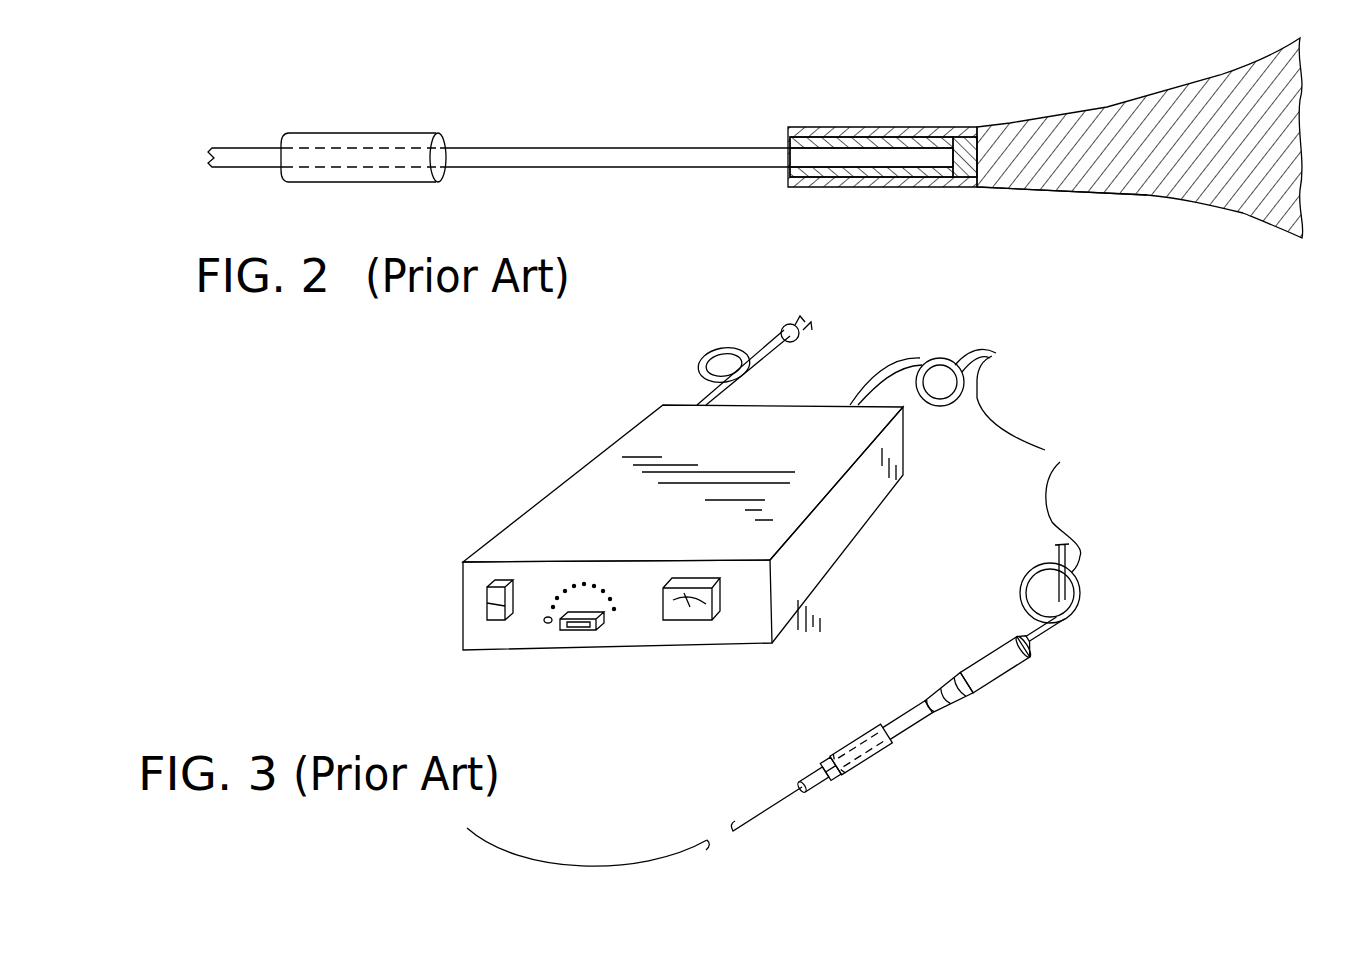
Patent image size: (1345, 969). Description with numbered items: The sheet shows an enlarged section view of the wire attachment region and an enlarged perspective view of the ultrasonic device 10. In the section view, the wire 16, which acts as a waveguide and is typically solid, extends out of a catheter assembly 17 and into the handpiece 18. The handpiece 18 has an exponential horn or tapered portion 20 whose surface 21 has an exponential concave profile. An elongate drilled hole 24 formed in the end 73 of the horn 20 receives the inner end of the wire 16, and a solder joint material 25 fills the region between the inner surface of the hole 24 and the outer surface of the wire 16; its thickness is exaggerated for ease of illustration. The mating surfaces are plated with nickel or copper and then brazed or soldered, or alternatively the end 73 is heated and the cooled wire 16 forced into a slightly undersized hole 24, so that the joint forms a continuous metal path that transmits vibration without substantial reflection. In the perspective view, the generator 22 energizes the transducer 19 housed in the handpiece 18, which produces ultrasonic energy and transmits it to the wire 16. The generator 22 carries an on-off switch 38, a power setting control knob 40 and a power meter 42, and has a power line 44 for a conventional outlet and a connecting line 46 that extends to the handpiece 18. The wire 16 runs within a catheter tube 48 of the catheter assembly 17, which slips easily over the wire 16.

In FIG. 3, the ultrasonic device 10 is at (628, 527).
In FIG. 2, the wire 16 is at (617, 155).
In FIG. 3, the wire 16 is at (696, 847).
In FIG. 2, the catheter assembly 17 is at (335, 125).
In FIG. 3, the catheter assembly 17 is at (838, 750).
In FIG. 3, the handpiece 18 is at (985, 664).
In FIG. 3, the transducer 19 is at (945, 690).
In FIG. 2, the exponential horn 20 is at (1135, 113).
In FIG. 3, the exponential horn 20 is at (900, 715).
In FIG. 2, the surface 21 is at (1035, 187).
In FIG. 3, the generator 22 is at (582, 470).
In FIG. 2, the drilled hole 24 is at (965, 140).
In FIG. 2, the solder joint material 25 is at (808, 187).
In FIG. 3, the on-off switch 38 is at (487, 617).
In FIG. 3, the power setting control knob 40 is at (591, 632).
In FIG. 3, the power meter 42 is at (697, 615).
In FIG. 3, the power line 44 is at (695, 378).
In FIG. 3, the connecting line 46 is at (969, 486).
In FIG. 3, the catheter tube 48 is at (820, 787).
In FIG. 2, the end of the horn 73 is at (786, 140).